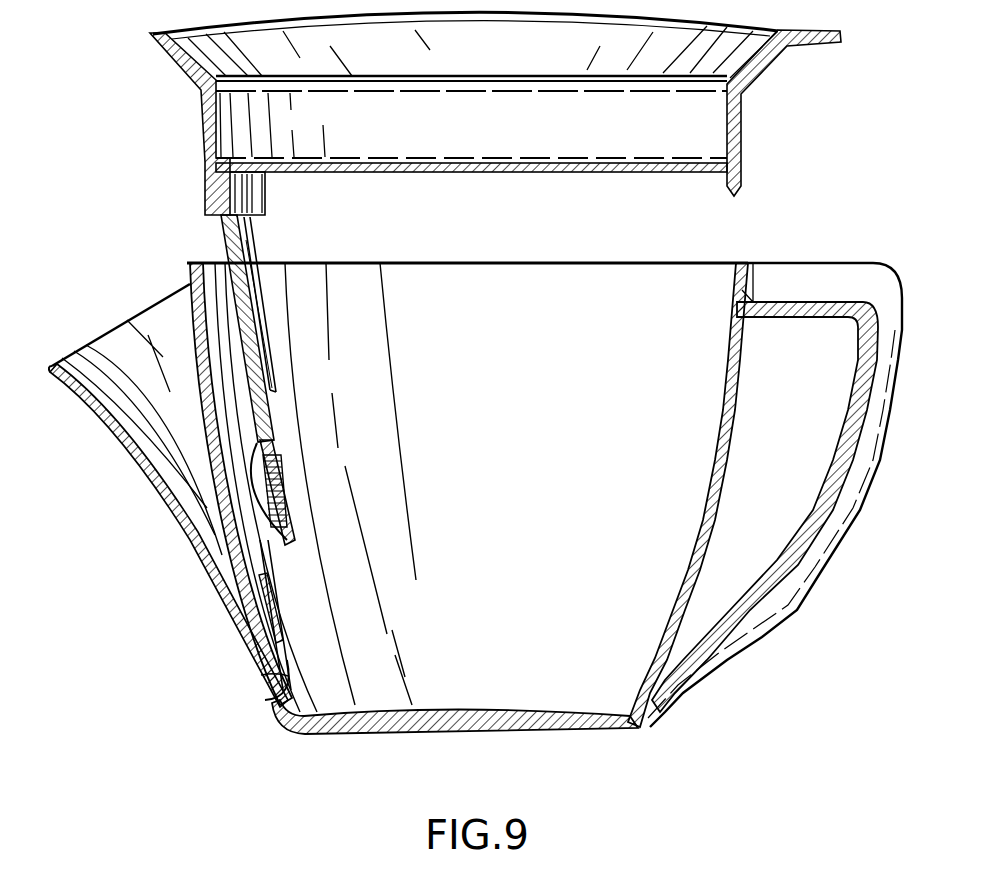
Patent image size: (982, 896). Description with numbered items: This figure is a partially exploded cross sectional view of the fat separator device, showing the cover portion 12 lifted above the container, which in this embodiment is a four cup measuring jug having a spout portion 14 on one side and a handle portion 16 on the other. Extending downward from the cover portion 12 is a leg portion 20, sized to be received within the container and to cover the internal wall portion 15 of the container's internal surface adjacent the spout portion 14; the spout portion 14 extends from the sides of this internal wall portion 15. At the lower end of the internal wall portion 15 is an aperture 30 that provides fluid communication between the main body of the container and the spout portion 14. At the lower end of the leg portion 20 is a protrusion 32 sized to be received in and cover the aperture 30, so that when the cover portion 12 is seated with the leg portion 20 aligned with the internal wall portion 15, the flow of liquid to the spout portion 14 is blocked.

The cover portion 12 is at (748, 135).
The spout portion 14 is at (80, 393).
The internal wall portion 15 is at (217, 480).
The handle portion 16 is at (863, 493).
The leg portion 20 is at (232, 322).
The aperture 30 is at (287, 673).
The protrusion 32 is at (250, 497).